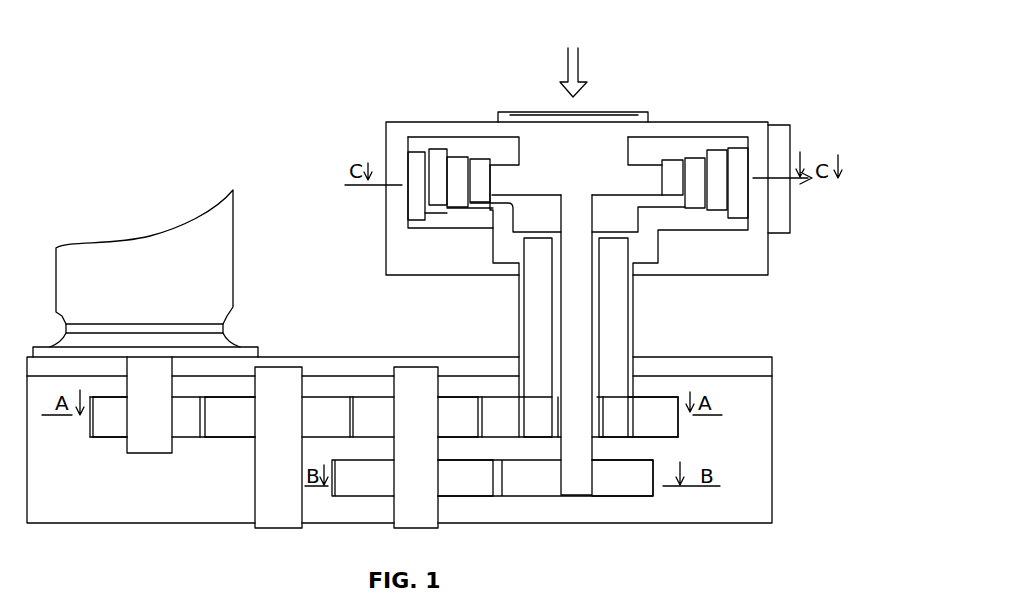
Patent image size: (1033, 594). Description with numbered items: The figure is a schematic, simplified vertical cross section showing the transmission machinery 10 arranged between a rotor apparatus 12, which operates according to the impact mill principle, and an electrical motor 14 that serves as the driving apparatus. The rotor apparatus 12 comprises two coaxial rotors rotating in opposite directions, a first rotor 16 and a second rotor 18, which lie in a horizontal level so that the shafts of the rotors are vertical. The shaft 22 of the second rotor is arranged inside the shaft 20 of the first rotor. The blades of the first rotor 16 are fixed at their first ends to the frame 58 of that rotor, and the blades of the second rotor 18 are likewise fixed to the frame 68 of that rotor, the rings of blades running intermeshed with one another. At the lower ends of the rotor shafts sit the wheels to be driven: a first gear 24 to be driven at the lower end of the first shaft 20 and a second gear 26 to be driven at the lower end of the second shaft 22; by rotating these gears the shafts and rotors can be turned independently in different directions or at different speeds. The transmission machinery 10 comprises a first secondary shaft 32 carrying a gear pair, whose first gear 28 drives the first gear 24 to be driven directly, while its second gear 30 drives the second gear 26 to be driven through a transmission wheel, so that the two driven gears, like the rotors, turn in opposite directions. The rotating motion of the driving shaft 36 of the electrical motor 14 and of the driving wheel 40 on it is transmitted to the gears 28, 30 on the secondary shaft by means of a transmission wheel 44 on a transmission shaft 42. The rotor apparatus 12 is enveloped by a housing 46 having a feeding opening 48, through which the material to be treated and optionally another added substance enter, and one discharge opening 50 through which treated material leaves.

The transmission machinery 10 is at (328, 347).
The rotor apparatus 12 is at (403, 60).
The electrical motor 14 is at (147, 260).
The first rotor 16 is at (432, 245).
The second rotor 18 is at (666, 128).
The shaft of the first rotor 20 is at (622, 295).
The shaft of the second rotor 22 is at (582, 356).
The first gear to be driven 24 is at (653, 417).
The second gear to be driven 26 is at (622, 478).
The first gear of the gear pair 28 is at (458, 417).
The second gear of the gear pair 30 is at (465, 478).
The first secondary shaft 32 is at (416, 448).
The driving shaft 36 is at (149, 405).
The driving wheel 40 is at (110, 417).
The transmission shaft 42 is at (278, 447).
The transmission wheel 44 is at (230, 417).
The housing 46 is at (386, 121).
The feeding opening 48 is at (540, 118).
The discharge opening 50 is at (780, 226).
The frame of the first rotor 58 is at (488, 214).
The frame of the second rotor 68 is at (696, 144).